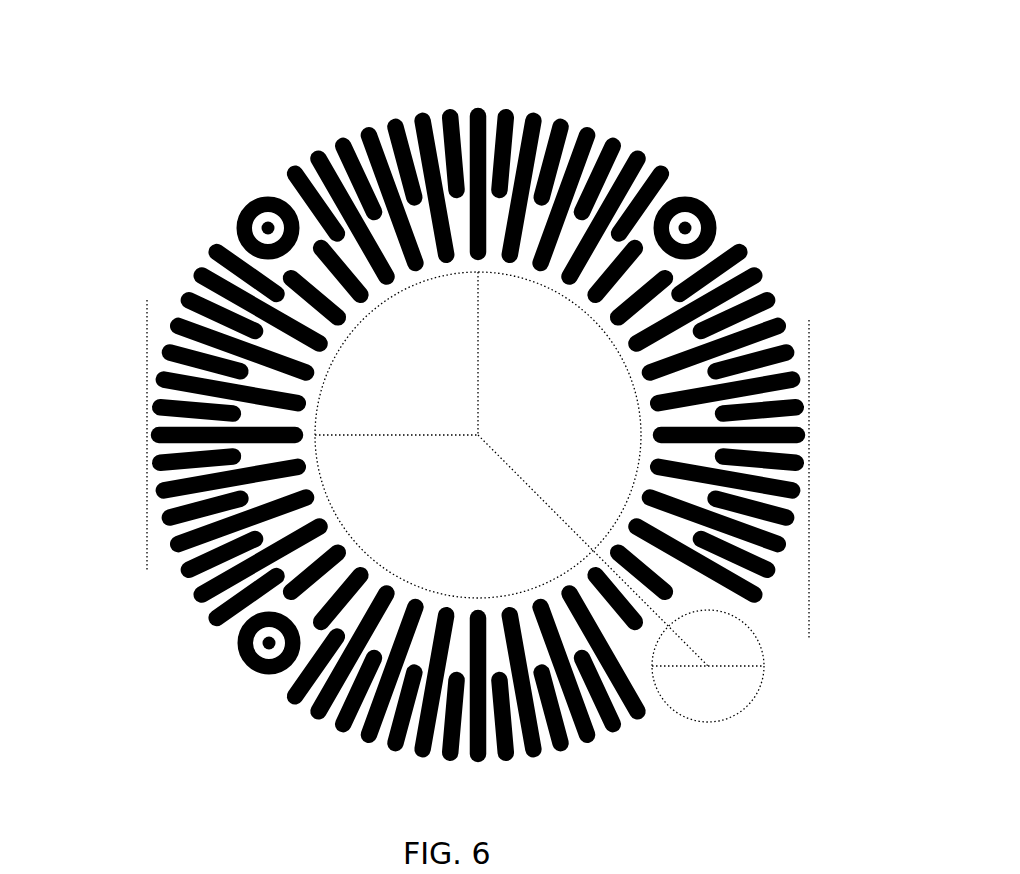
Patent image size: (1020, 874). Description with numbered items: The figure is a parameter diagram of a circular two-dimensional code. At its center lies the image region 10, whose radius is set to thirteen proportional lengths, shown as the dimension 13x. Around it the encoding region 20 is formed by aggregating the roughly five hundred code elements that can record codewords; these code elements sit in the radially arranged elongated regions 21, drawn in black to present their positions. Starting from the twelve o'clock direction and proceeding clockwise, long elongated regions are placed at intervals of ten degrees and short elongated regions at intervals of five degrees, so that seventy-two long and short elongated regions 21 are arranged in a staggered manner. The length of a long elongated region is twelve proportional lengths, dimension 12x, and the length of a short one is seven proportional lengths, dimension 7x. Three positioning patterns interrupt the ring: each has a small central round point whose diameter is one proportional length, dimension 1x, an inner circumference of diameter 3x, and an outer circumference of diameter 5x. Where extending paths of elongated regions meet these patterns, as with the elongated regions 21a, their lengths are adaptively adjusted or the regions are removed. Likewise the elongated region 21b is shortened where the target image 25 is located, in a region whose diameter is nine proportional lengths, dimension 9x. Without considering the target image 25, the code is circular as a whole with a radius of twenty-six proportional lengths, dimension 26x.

The image region 10 is at (603, 443).
The encoding region 20 is at (427, 408).
The elongated region 21 is at (158, 378).
The elongated region 21a is at (610, 327).
The elongated region 21b is at (613, 548).
The target image 25 is at (755, 683).
The diameter of small round point 1x is at (275, 228).
The diameter of inner circumference of positioning pattern 3x is at (701, 228).
The diameter of outer circumference of positioning pattern 5x is at (285, 643).
The length of short elongated region 7x is at (813, 524).
The diameter of target image region 9x is at (708, 683).
The length of long elongated region 12x is at (500, 470).
The radius of image region 13x is at (396, 353).
The radius of two-dimensional code circle 26x is at (593, 550).